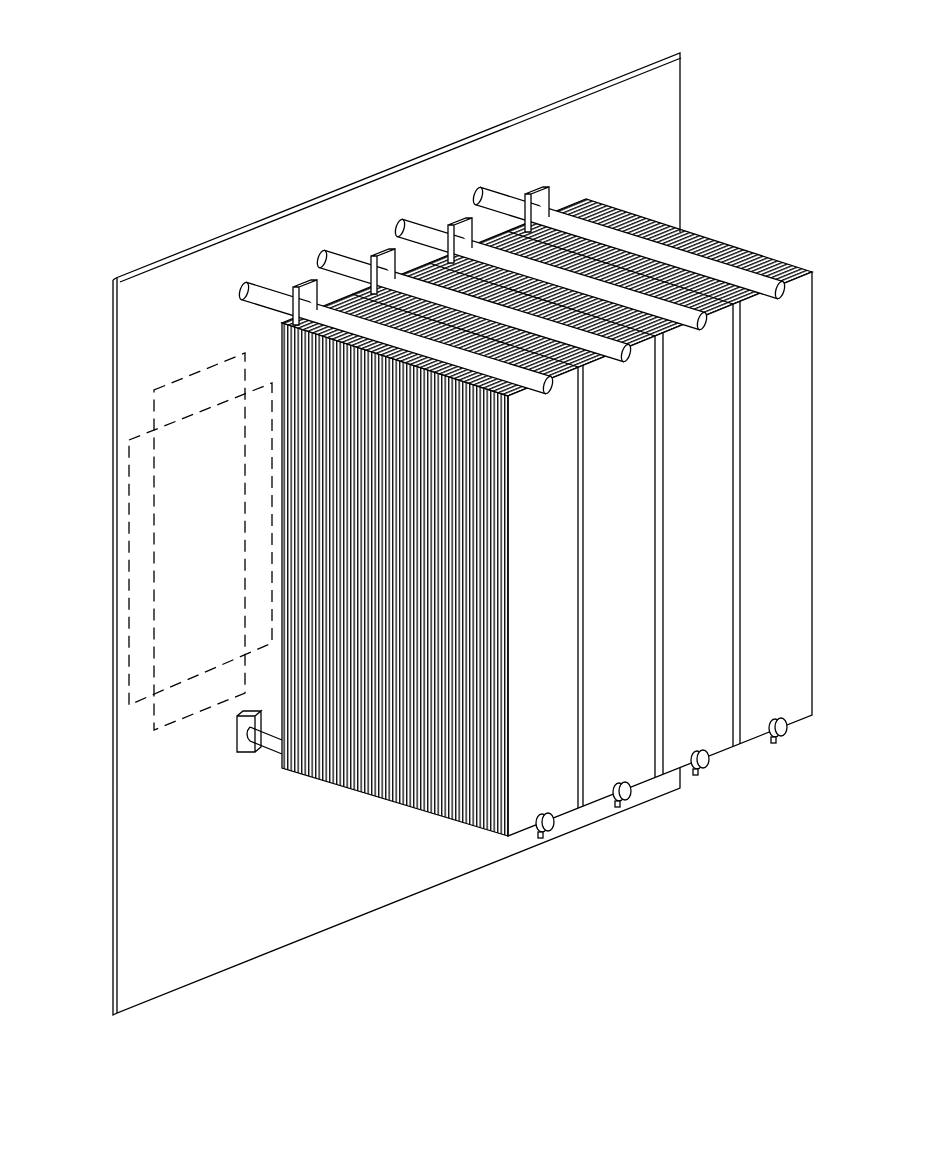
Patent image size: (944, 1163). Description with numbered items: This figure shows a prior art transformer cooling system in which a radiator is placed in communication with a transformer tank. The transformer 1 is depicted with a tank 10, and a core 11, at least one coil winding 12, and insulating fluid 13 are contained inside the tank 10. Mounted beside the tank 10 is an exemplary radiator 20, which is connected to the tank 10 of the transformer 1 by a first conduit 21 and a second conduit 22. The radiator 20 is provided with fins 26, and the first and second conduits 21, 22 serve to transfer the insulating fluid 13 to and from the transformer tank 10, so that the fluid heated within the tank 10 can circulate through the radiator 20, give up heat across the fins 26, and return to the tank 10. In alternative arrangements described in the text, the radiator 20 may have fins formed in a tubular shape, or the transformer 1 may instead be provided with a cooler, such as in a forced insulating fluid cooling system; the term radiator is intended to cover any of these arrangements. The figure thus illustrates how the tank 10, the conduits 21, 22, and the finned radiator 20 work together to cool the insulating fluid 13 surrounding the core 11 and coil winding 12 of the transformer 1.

The transformer 1 is at (740, 104).
The tank 10 is at (353, 534).
The core 11 is at (155, 388).
The coil winding 12 is at (130, 492).
The insulating fluid 13 is at (74, 665).
The radiator 20 is at (549, 520).
The first conduit 21 is at (256, 287).
The second conduit 22 is at (240, 755).
The fins 26 is at (412, 787).